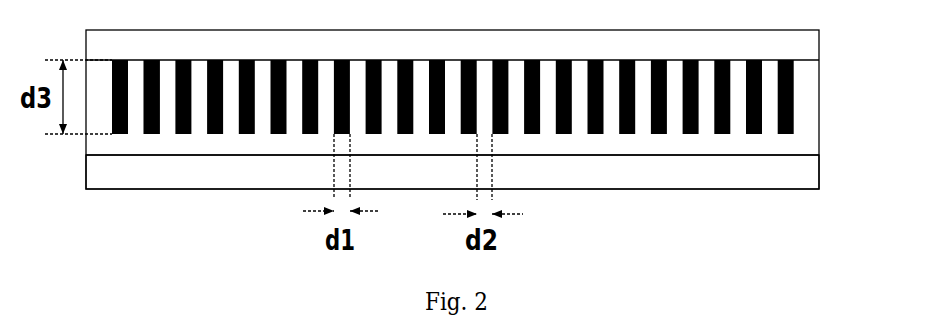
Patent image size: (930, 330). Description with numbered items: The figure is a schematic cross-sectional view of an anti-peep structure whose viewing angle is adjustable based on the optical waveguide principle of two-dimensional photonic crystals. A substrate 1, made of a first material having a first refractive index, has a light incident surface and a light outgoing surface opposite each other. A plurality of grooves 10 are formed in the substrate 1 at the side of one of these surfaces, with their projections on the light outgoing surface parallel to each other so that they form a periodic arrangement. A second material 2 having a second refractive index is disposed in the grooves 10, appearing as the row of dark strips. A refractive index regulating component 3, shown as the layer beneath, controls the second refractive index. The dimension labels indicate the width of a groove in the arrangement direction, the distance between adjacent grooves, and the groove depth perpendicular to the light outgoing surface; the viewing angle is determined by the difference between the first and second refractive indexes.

The substrate 1 is at (803, 143).
The second material 2 is at (794, 94).
The refractive index regulating component 3 is at (665, 180).
The grooves 10 is at (152, 134).